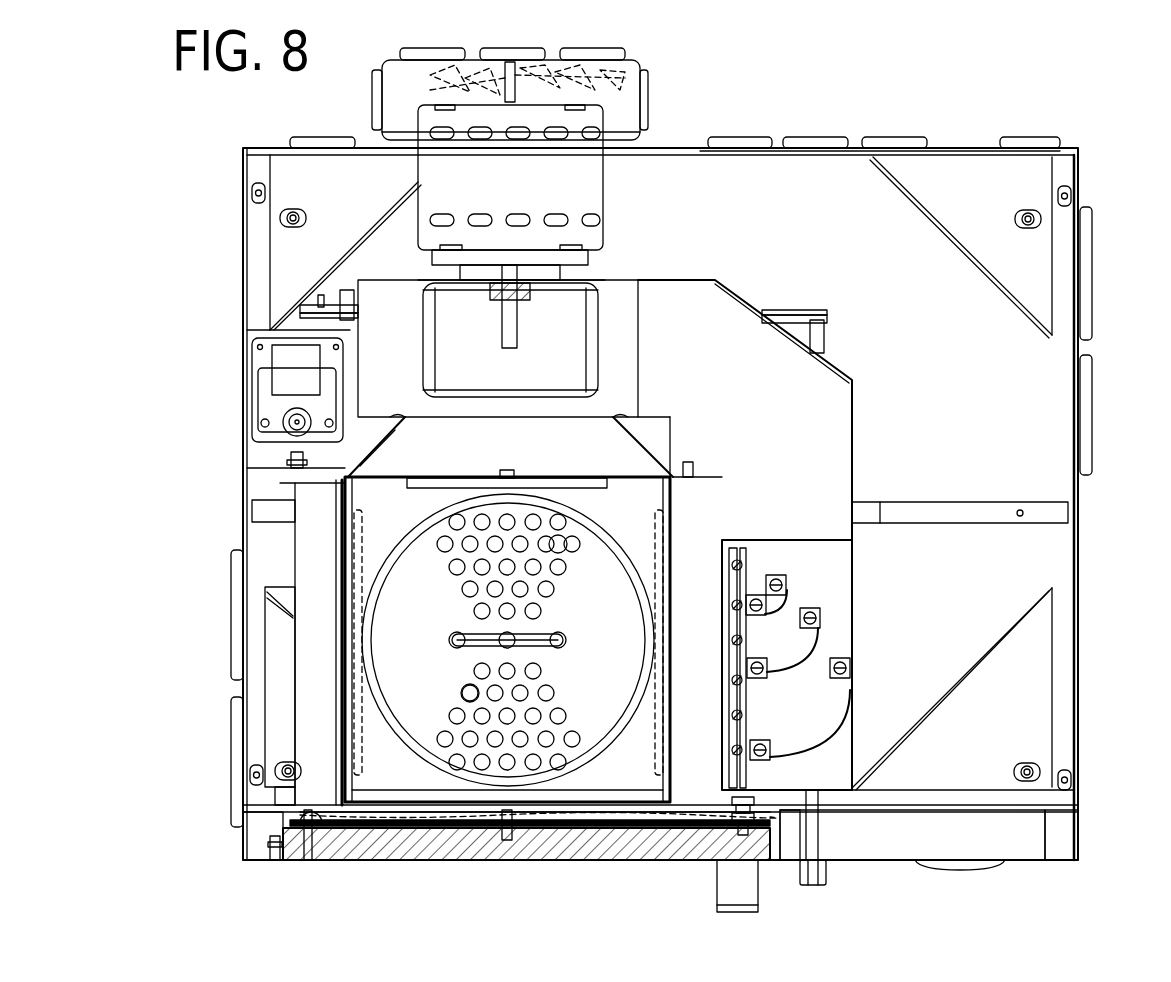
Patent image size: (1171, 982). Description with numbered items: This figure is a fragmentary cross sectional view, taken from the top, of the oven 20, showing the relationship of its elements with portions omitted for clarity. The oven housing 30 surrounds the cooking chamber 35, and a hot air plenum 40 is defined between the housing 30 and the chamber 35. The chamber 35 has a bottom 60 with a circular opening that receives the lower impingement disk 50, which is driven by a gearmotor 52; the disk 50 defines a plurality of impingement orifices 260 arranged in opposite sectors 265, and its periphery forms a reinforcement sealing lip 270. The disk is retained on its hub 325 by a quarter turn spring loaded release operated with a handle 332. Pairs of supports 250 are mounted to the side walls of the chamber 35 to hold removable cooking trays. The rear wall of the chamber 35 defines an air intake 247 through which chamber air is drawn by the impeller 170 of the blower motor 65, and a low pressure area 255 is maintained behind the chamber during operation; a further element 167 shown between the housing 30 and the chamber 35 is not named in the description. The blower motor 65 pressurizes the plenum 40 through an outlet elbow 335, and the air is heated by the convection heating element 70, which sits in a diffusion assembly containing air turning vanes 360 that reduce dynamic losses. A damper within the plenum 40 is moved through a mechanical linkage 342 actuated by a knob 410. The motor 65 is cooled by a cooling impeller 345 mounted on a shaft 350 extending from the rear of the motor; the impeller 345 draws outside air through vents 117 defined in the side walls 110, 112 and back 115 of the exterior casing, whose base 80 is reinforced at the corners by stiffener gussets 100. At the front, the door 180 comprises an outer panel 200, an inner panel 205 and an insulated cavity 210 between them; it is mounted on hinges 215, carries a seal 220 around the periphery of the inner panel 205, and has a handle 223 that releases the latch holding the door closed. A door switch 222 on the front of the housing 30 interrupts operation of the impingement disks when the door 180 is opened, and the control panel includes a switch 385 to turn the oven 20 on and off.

The oven 20 is at (826, 115).
The oven housing 30 is at (292, 596).
The cooking chamber 35 is at (340, 690).
The plenum 40 is at (318, 566).
The lower impingement disk 50 is at (616, 742).
The gearmotor 52 is at (268, 360).
The bottom 60 is at (644, 488).
The blower motor 65 is at (624, 210).
The convection heating element 70 is at (738, 552).
The base 80 is at (1025, 392).
The stiffener gussets 100 is at (1012, 190).
The side wall 110 is at (240, 486).
The side wall 112 is at (1078, 540).
The back 115 is at (968, 140).
The vents 117 is at (376, 88).
The hopper wall 167 is at (450, 424).
The impeller 170 is at (560, 345).
The door 180 is at (420, 862).
The outer panel 200 is at (460, 862).
The inner panel 205 is at (532, 832).
The insulated cavity 210 is at (582, 832).
The hinges 215 is at (273, 866).
The seal 220 is at (310, 842).
The door switch 222 is at (736, 800).
The handle 223 is at (712, 877).
The air intake 247 is at (555, 476).
The supports 250 is at (366, 552).
The low pressure area 255 is at (632, 432).
The impingement orifices 260 is at (452, 570).
The opposite sectors 265 is at (580, 560).
The reinforcement sealing lip 270 is at (403, 748).
The hub 325 is at (522, 638).
The handle 332 is at (548, 640).
The outlet elbow 335 is at (800, 446).
The linkage 342 is at (337, 310).
The cooling impeller 345 is at (648, 76).
The shaft 350 is at (508, 68).
The air turning vanes 360 is at (783, 604).
The on-off switch 385 is at (975, 868).
The knob 410 is at (832, 876).